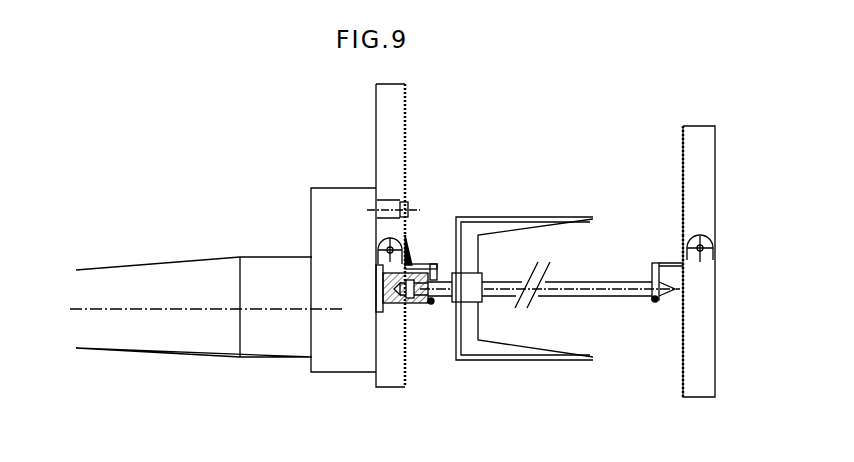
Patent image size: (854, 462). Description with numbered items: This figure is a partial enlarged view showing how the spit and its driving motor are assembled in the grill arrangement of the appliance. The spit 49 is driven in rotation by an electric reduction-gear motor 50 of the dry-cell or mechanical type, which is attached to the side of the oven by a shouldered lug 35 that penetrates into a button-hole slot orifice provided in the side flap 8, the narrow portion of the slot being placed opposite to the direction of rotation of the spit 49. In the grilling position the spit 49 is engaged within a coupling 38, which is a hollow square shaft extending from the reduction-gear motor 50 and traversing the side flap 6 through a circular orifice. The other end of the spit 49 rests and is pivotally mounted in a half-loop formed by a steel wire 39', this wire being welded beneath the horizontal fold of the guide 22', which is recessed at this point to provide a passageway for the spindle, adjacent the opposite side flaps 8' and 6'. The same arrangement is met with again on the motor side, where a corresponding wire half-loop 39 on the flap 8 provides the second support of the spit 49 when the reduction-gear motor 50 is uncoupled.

The side flap 6 is at (405, 311).
The side flap 8 is at (409, 159).
The shouldered lug 35 is at (412, 209).
The coupling 38 is at (398, 305).
The steel wire half-loop 39 is at (427, 316).
The spit 49 is at (578, 297).
The electric reduction-gear motor 50 is at (147, 341).
The side flap 6' is at (683, 316).
The side flap 8' is at (681, 193).
The guide 22' is at (662, 263).
The steel wire half-loop 39' is at (641, 314).